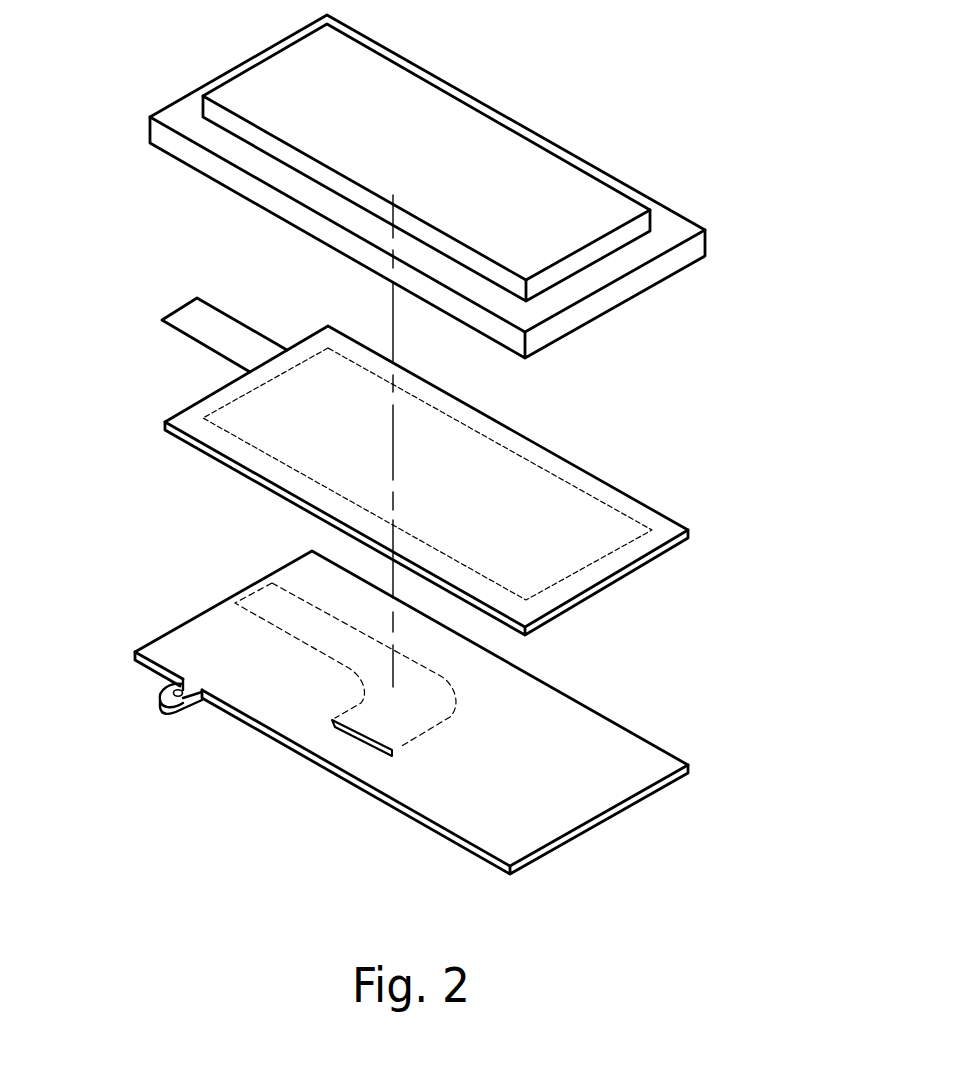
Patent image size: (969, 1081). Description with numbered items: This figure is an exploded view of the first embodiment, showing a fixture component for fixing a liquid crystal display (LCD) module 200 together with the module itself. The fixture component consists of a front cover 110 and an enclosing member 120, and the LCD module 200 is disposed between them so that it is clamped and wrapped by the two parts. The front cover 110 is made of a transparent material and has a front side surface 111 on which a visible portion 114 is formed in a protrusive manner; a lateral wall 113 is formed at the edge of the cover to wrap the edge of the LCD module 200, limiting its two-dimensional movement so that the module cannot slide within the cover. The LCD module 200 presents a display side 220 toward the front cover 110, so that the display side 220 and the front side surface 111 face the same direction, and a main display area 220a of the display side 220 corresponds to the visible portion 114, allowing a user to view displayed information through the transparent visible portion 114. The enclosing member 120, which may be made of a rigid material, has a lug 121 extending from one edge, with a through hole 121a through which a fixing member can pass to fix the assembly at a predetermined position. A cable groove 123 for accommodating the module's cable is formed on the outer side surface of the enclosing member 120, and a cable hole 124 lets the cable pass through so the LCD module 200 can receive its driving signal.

The front cover 110 is at (477, 186).
The front side surface 111 is at (668, 232).
The lateral wall 113 is at (650, 273).
The visible portion 114 is at (520, 170).
The liquid crystal display (LCD) module 200 is at (488, 466).
The display side 220 is at (550, 447).
The main display area 220a is at (600, 533).
The enclosing member 120 is at (433, 700).
The lug 121 is at (126, 733).
The through hole 121a is at (174, 692).
The cable groove 123 is at (267, 600).
The cable hole 124 is at (360, 740).